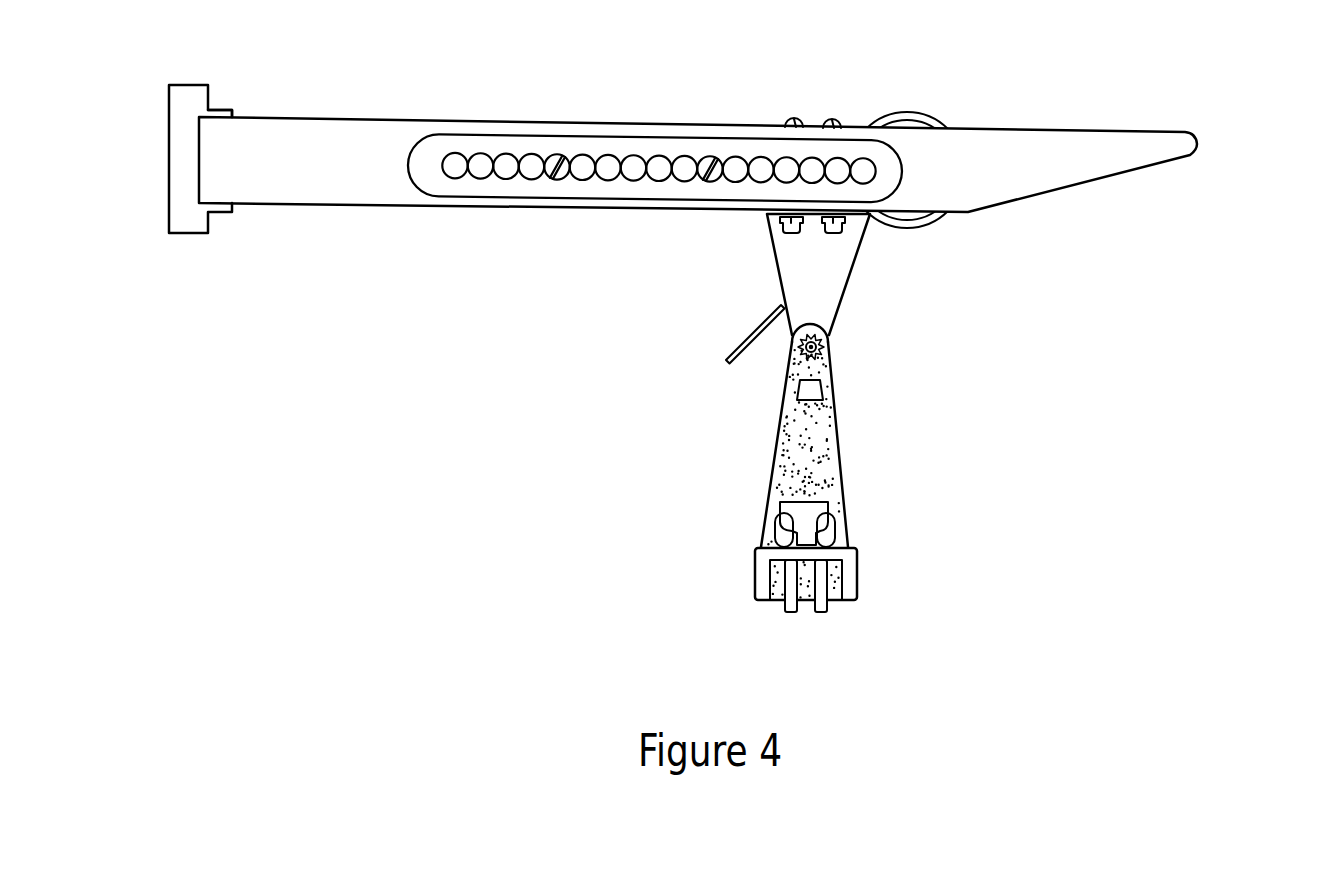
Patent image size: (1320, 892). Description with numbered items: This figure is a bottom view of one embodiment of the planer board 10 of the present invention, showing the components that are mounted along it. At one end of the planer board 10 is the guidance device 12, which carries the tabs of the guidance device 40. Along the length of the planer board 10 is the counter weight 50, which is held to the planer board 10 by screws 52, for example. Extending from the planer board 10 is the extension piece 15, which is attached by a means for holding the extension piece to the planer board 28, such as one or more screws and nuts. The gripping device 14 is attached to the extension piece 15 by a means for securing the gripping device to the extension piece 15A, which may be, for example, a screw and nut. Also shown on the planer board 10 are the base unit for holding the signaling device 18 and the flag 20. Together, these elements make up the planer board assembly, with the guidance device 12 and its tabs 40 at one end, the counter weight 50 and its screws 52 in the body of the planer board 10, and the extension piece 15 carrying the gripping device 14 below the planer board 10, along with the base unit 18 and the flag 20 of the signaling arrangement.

The planer board 10 is at (1182, 142).
The guidance device 12 is at (167, 173).
The gripping device 14 is at (942, 344).
The extension piece 15 is at (833, 280).
The means for securing the gripping device to the extension piece 15A is at (815, 353).
The base unit for holding the signaling device 18 is at (920, 115).
The flag 20 is at (730, 353).
The means for holding the extension piece to the planer board 28 is at (825, 232).
The tabs of the guidance device 40 is at (220, 108).
The counter weight 50 is at (597, 145).
The screws 52 is at (697, 177).